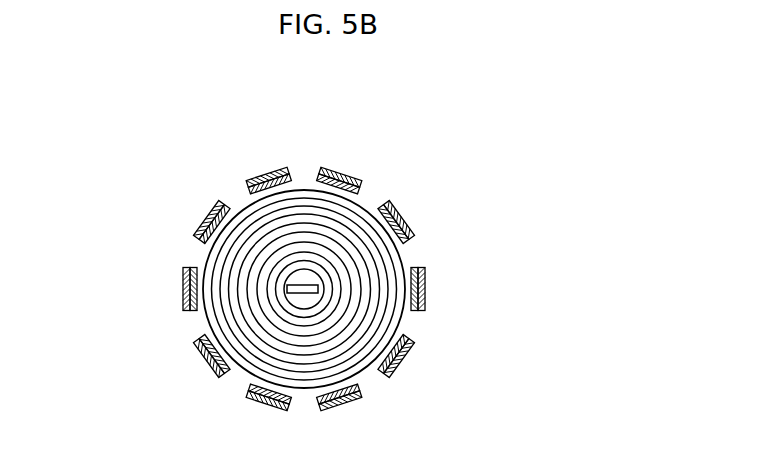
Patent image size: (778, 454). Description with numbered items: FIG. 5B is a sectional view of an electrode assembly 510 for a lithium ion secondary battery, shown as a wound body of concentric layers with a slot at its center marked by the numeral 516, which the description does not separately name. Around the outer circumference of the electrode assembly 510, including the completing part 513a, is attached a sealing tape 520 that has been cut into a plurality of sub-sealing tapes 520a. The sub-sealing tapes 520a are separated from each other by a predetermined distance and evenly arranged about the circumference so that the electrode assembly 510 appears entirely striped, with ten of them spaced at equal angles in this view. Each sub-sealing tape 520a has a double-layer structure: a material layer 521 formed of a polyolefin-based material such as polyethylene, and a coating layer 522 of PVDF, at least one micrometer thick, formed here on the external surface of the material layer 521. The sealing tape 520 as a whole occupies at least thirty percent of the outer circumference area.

The electrode assembly 510 is at (430, 152).
The central shaft slot 516 is at (305, 285).
The completing part 513a is at (178, 280).
The sealing tape 520 is at (604, 230).
The sub-sealing tape 520a is at (522, 200).
The material layer 521 is at (400, 211).
The coating layer 522 is at (408, 224).